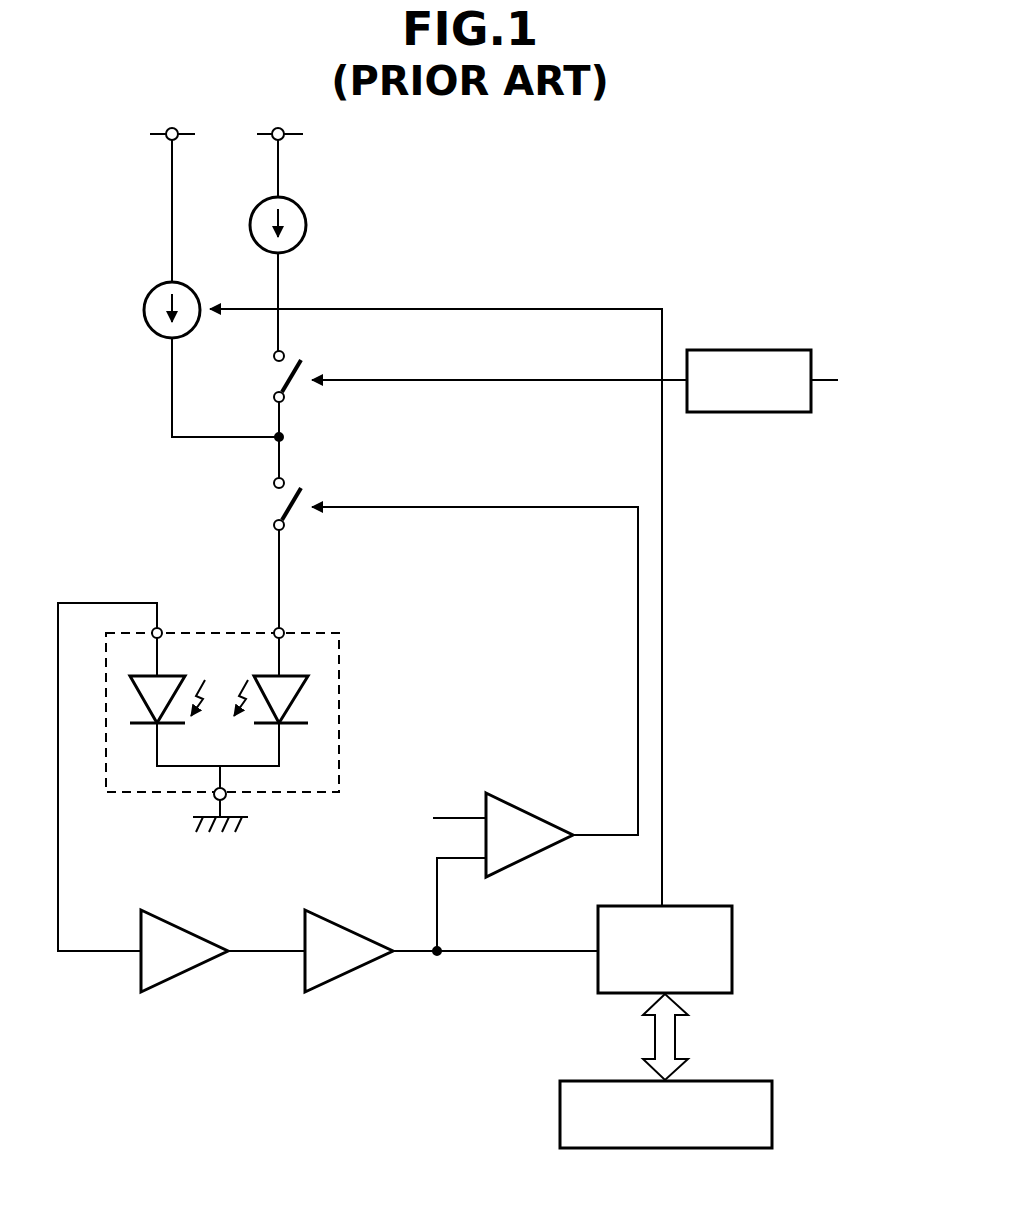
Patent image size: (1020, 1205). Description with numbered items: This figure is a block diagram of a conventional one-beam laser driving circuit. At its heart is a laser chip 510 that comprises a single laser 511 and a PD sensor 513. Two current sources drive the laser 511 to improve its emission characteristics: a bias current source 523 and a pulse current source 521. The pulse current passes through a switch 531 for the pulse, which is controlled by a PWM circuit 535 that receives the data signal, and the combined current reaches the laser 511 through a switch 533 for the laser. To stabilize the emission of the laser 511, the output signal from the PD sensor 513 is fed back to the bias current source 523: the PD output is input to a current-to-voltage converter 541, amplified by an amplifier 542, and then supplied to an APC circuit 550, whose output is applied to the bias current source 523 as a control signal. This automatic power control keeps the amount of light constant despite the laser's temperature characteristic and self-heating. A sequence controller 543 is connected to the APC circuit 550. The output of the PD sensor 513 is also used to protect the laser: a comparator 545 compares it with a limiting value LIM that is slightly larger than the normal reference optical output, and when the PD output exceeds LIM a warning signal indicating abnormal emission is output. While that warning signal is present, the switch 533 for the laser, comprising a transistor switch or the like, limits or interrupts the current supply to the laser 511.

The bias current source 523 is at (150, 300).
The pulse current source 521 is at (306, 218).
The switch for a pulse 531 is at (302, 362).
The switch for the laser 533 is at (302, 490).
The PWM circuit 535 is at (745, 350).
The PD sensor 513 is at (128, 675).
The laser 511 is at (288, 675).
The laser chip 510 is at (339, 698).
The comparator 545 is at (486, 810).
The current-to-voltage converter 541 is at (175, 980).
The amplifier 542 is at (342, 978).
The APC circuit 550 is at (700, 906).
The sequence controller 543 is at (730, 1081).